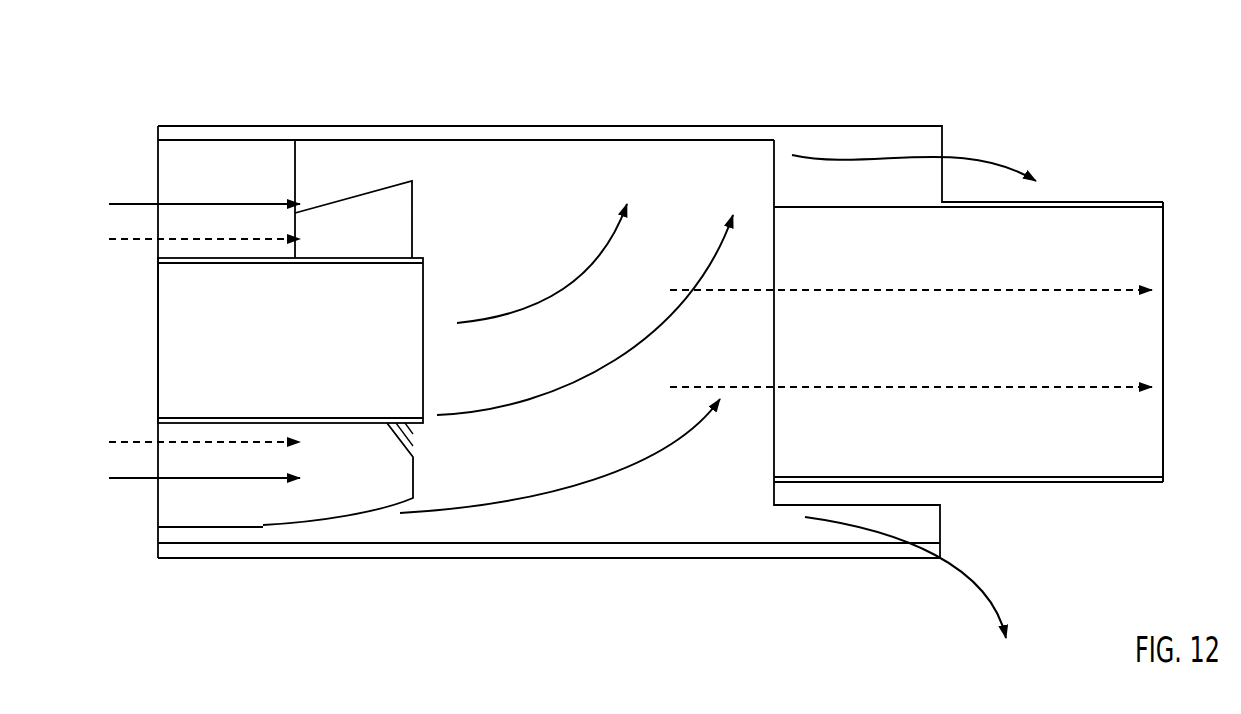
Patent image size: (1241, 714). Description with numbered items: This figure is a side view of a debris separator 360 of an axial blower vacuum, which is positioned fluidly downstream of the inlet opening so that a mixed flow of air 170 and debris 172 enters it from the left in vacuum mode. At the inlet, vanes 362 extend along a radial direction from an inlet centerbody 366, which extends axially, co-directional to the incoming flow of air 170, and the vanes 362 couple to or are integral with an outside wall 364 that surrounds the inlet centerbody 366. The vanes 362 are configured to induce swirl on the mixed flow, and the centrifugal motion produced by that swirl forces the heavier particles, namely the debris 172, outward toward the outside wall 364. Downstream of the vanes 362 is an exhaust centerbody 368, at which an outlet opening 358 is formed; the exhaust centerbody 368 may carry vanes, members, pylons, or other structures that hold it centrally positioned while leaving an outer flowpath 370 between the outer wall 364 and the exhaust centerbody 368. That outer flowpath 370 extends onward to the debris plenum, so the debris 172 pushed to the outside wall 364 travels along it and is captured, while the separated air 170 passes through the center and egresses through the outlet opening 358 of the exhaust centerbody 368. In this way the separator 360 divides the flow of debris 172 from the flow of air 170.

The debris separator 360 is at (466, 82).
The outside wall 364 is at (262, 126).
The vanes 362 is at (380, 222).
The inlet centerbody 366 is at (232, 290).
The outer flowpath 370 is at (772, 182).
The debris 172 is at (978, 150).
The air 170 is at (1090, 290).
The exhaust centerbody 368 is at (1047, 207).
The outlet opening 358 is at (1184, 484).